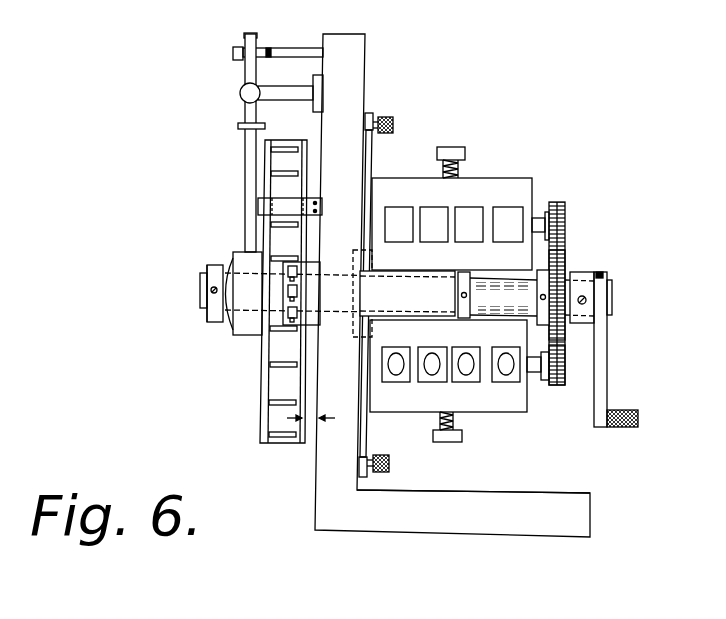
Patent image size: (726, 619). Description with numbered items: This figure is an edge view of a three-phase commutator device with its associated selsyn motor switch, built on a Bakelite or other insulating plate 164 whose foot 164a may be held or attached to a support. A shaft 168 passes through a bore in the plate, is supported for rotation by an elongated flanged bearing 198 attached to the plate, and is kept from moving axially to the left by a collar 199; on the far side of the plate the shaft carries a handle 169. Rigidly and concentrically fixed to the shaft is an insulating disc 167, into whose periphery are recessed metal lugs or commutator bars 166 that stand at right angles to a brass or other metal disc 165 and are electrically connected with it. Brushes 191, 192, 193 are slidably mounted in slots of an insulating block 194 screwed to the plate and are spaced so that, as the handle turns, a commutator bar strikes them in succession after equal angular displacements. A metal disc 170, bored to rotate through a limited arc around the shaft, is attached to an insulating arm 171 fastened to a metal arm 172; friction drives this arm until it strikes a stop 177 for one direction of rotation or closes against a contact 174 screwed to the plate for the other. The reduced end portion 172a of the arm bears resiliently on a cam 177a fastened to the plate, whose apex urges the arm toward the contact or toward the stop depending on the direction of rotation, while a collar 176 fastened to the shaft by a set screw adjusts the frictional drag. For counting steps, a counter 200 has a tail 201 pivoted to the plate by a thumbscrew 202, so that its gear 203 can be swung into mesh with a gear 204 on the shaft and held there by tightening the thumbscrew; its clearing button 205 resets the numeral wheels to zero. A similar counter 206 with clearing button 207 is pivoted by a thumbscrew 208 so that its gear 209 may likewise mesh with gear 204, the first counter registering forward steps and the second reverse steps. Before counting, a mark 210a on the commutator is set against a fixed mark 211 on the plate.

The insulating plate 164 is at (367, 56).
The foot 164a is at (465, 530).
The metal disc 165 is at (258, 440).
The commutator bars 166 is at (270, 363).
The insulating disc 167 is at (300, 383).
The shaft 168 is at (207, 282).
The handle 169 is at (606, 392).
The metal disc 170 is at (233, 333).
The insulating arm 171 is at (248, 207).
The metal arm 172 is at (247, 147).
The reduced end portion 172a is at (245, 38).
The contact 174 is at (240, 95).
The collar 176 is at (207, 317).
The stop 177 is at (240, 126).
The cam 177a is at (268, 50).
The brush 191 is at (296, 266).
The brush 192 is at (298, 292).
The brush 193 is at (292, 322).
The insulating block 194 is at (303, 320).
The elongated flanged bearing 198 is at (390, 273).
The collar 199 is at (462, 314).
The counter 200 is at (507, 178).
The tail 201 is at (373, 153).
The thumbscrew 202 is at (392, 116).
The gear 203 is at (567, 205).
The gear 204 is at (567, 252).
The clearing button 205 is at (465, 149).
The counter 206 is at (493, 412).
The clearing button 207 is at (452, 443).
The thumbscrew 208 is at (390, 464).
The gear 209 is at (559, 386).
The mark 210a is at (292, 425).
The fixed mark 211 is at (328, 423).